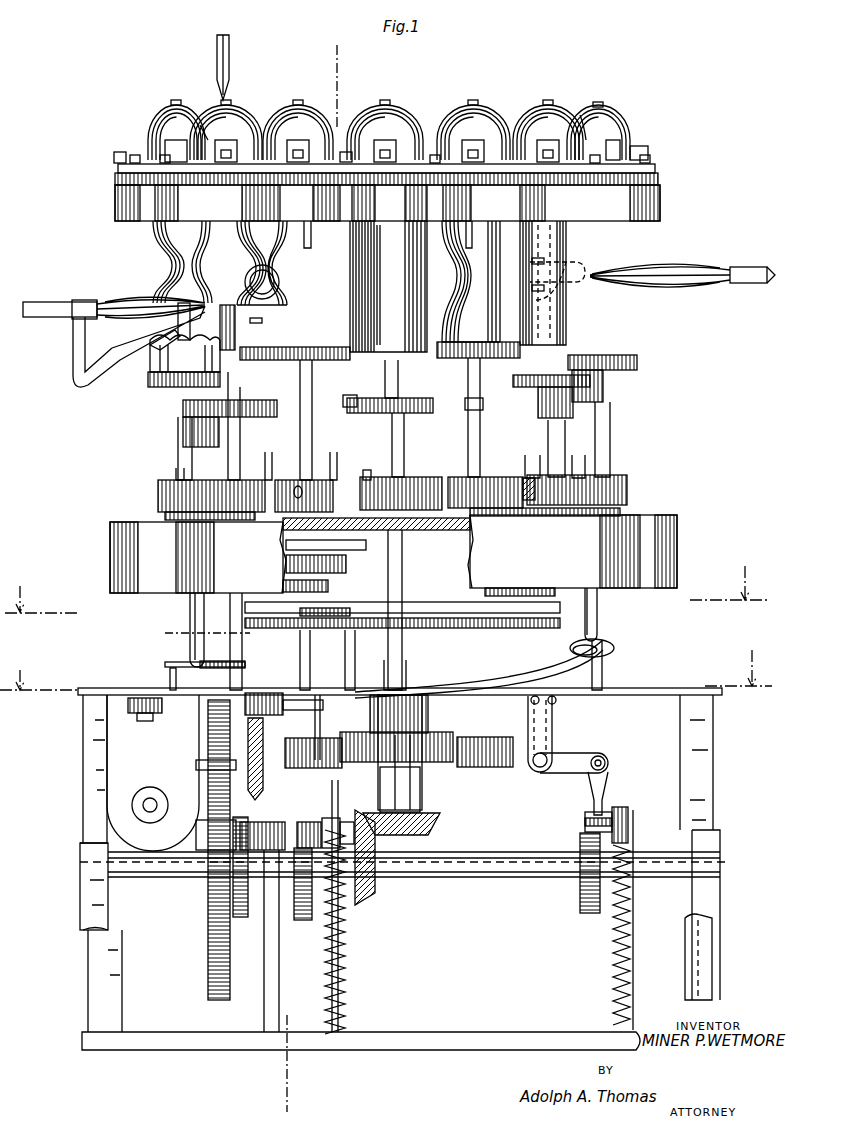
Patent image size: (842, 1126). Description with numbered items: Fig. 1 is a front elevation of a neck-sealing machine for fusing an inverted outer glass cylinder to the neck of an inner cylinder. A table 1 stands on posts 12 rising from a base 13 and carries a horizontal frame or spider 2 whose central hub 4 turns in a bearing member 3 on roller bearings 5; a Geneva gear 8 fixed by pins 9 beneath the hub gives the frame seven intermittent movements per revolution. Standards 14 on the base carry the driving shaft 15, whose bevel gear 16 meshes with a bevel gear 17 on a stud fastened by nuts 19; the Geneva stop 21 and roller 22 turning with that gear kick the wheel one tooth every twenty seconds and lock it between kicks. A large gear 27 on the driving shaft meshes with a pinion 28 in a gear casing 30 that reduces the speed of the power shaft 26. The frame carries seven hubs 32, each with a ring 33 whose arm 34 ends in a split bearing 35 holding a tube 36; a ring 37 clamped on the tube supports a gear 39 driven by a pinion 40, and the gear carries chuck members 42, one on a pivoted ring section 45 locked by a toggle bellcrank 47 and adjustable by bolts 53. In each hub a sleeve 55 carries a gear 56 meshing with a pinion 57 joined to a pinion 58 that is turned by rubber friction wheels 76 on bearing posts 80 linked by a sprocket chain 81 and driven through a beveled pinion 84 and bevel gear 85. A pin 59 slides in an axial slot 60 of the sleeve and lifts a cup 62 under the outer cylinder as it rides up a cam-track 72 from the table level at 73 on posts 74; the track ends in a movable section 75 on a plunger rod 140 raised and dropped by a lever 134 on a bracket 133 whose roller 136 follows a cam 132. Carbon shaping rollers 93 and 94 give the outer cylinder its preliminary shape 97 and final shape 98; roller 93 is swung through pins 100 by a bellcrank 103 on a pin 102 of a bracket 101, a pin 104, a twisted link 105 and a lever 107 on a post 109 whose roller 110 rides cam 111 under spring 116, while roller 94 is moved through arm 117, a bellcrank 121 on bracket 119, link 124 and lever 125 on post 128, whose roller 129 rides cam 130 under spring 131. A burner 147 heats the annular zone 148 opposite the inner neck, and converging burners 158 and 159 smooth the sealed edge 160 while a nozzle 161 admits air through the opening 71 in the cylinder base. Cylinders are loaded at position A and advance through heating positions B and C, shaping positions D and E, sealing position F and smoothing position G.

The table 1 is at (660, 688).
The horizontal frame or spider 2 is at (665, 520).
The bearing member 3 is at (362, 40).
The central hub 4 is at (386, 556).
The roller bearings 5 is at (440, 590).
The Geneva gear 8 is at (492, 767).
The pins 9 is at (387, 580).
The posts 12 is at (83, 750).
The base 13 is at (430, 1036).
The aligned standards 14 is at (80, 910).
The rotary driving shaft 15 is at (485, 850).
The bevel gear 16 is at (375, 895).
The bevel gear 17 is at (440, 826).
The nuts 19 is at (422, 710).
The Geneva stop 21 is at (470, 762).
The roller 22 is at (398, 748).
The power shaft 26 is at (152, 800).
The large gear 27 is at (208, 946).
The pinion 28 is at (212, 715).
The gear casing 30 is at (115, 183).
The hubs 32 is at (630, 510).
The sleeve or ring 33 is at (455, 478).
The arm 34 is at (366, 480).
The split bearing 35 is at (300, 485).
The tube 36 is at (304, 232).
The ring 37 is at (118, 205).
The gear 39 is at (660, 178).
The pinion 40 is at (450, 172).
The holding members 42 is at (222, 140).
The ring section 45 is at (120, 168).
The bellcrank 47 is at (118, 160).
The screws or bolts 53 is at (612, 140).
The sleeve 55 is at (385, 383).
The gear 56 is at (286, 540).
The pinion 57 is at (286, 562).
The pinion 58 is at (316, 588).
The pin 59 is at (190, 600).
The axial slot 60 is at (348, 400).
The cup 62 is at (463, 348).
The small opening 71 is at (205, 125).
The cam-track 72 is at (615, 645).
The rising start of cam-track 73 is at (408, 690).
The posts 74 is at (600, 665).
The vertically movable cam-track section 75 is at (165, 633).
The friction wheels 76 is at (525, 585).
The bearing posts 80 is at (520, 655).
The sprocket chain 81 is at (472, 617).
The beveled pinion 84 is at (256, 735).
The bevel gear 85 is at (268, 762).
The shaping roller 93 is at (500, 283).
The shaping roller 94 is at (268, 292).
The preliminary shape 97 is at (455, 283).
The final shape 98 is at (288, 280).
The pins or rollers 100 is at (523, 703).
The bracket 101 is at (555, 725).
The pin 102 is at (540, 768).
The bellcrank 103 is at (575, 752).
The pin 104 is at (608, 760).
The twisted link 105 is at (606, 785).
The lever 107 is at (622, 812).
The post or bracket 109 is at (612, 950).
The roller 110 is at (582, 822).
The cam 111 is at (585, 905).
The coil spring 116 is at (632, 920).
The arm 117 is at (306, 690).
The bracket 119 is at (368, 688).
The bellcrank 121 is at (316, 725).
The link 124 is at (326, 820).
The lever 125 is at (345, 822).
The post 128 is at (345, 988).
The roller 129 is at (297, 825).
The cam 130 is at (300, 922).
The coil spring 131 is at (343, 940).
The third cam 132 is at (242, 917).
The post or bracket 133 is at (265, 1010).
The lever 134 is at (256, 822).
The roller 136 is at (210, 818).
The plunger rod 140 is at (170, 685).
The gas jet or burner 147 is at (746, 268).
The dotted lines 148 is at (562, 275).
The upper burners 158 is at (88, 302).
The lower burners 159 is at (100, 365).
The sealing edge 160 is at (165, 248).
The nozzle 161 is at (216, 70).
The loading position A is at (345, 150).
The preliminary heating position B is at (553, 112).
The second heating position C is at (612, 130).
The preliminary shaping position D is at (476, 112).
The final shaping position E is at (272, 115).
The sealing position F is at (170, 118).
The smoothing position G is at (228, 112).